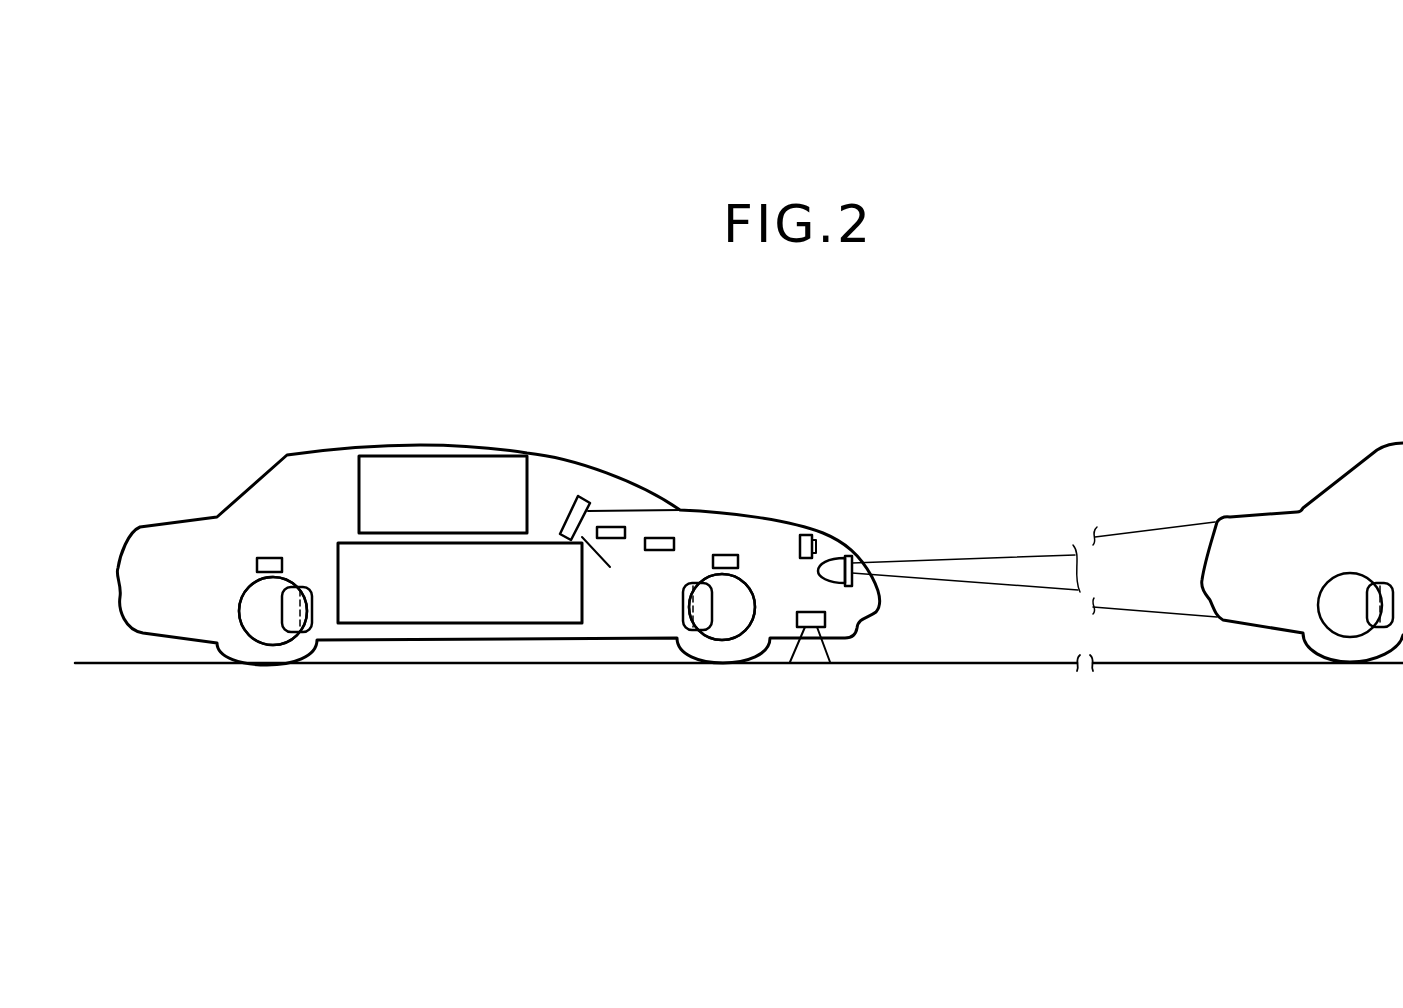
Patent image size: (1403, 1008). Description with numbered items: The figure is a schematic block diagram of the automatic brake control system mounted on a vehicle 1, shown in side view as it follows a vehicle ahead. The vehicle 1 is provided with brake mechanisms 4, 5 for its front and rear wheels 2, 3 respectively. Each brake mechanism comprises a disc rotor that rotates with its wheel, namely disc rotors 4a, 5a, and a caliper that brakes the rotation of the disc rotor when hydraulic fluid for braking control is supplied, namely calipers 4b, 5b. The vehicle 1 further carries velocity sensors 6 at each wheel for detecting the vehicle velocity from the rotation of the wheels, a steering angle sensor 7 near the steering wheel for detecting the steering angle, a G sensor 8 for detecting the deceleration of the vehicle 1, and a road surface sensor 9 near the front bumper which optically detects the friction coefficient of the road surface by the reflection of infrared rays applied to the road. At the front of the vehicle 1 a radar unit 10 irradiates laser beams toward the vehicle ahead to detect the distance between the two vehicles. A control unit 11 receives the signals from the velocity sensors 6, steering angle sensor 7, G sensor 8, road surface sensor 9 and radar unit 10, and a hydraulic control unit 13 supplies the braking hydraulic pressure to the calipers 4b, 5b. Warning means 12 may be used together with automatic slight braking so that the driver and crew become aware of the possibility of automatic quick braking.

The vehicle 1 is at (643, 430).
The front wheel 2 is at (750, 664).
The rear wheel 3 is at (233, 656).
The brake mechanism 4 is at (701, 604).
The disc rotor 4a is at (740, 605).
The caliper 4b is at (683, 622).
The brake mechanism 5 is at (247, 594).
The disc rotor 5a is at (243, 623).
The caliper 5b is at (318, 577).
The velocity sensor 6 is at (273, 557).
The steering angle sensor 7 is at (610, 527).
The G sensor 8 is at (663, 538).
The road surface sensor 9 is at (825, 618).
The radar unit 10 is at (835, 562).
The control unit 11 is at (443, 456).
The warning means 12 is at (812, 535).
The hydraulic control unit 13 is at (437, 627).